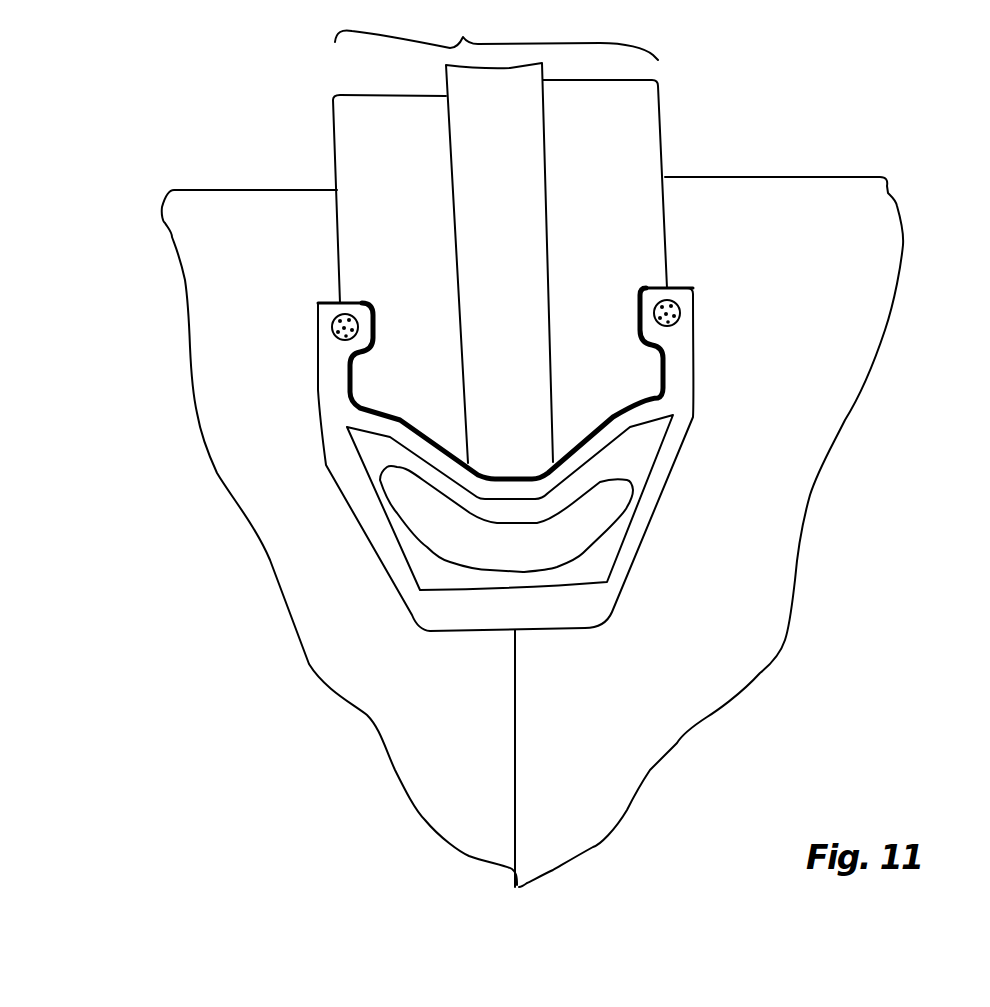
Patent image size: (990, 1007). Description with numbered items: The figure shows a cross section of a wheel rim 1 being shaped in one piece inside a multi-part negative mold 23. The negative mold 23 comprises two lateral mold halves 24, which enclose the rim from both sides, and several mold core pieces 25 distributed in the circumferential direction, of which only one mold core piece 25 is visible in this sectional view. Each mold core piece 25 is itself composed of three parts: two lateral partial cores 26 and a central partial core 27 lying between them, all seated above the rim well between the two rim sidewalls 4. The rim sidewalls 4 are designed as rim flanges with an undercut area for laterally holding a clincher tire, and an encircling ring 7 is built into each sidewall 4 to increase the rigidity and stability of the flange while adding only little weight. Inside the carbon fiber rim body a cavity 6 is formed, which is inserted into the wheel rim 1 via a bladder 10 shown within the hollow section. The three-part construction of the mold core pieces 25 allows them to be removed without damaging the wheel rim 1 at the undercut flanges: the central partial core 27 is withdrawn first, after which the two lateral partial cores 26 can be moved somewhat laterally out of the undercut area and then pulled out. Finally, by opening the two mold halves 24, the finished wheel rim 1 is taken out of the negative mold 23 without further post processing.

The wheel rim 1 is at (703, 358).
The rim sidewalls 4 is at (327, 380).
The cavity 6 is at (650, 468).
The encircling ring 7 is at (333, 333).
The bladder 10 is at (603, 527).
The negative mold 23 is at (175, 412).
The mold halves 24 is at (284, 525).
The mold core pieces 25 is at (496, 30).
The lateral partial cores 26 is at (348, 133).
The central partial core 27 is at (521, 207).